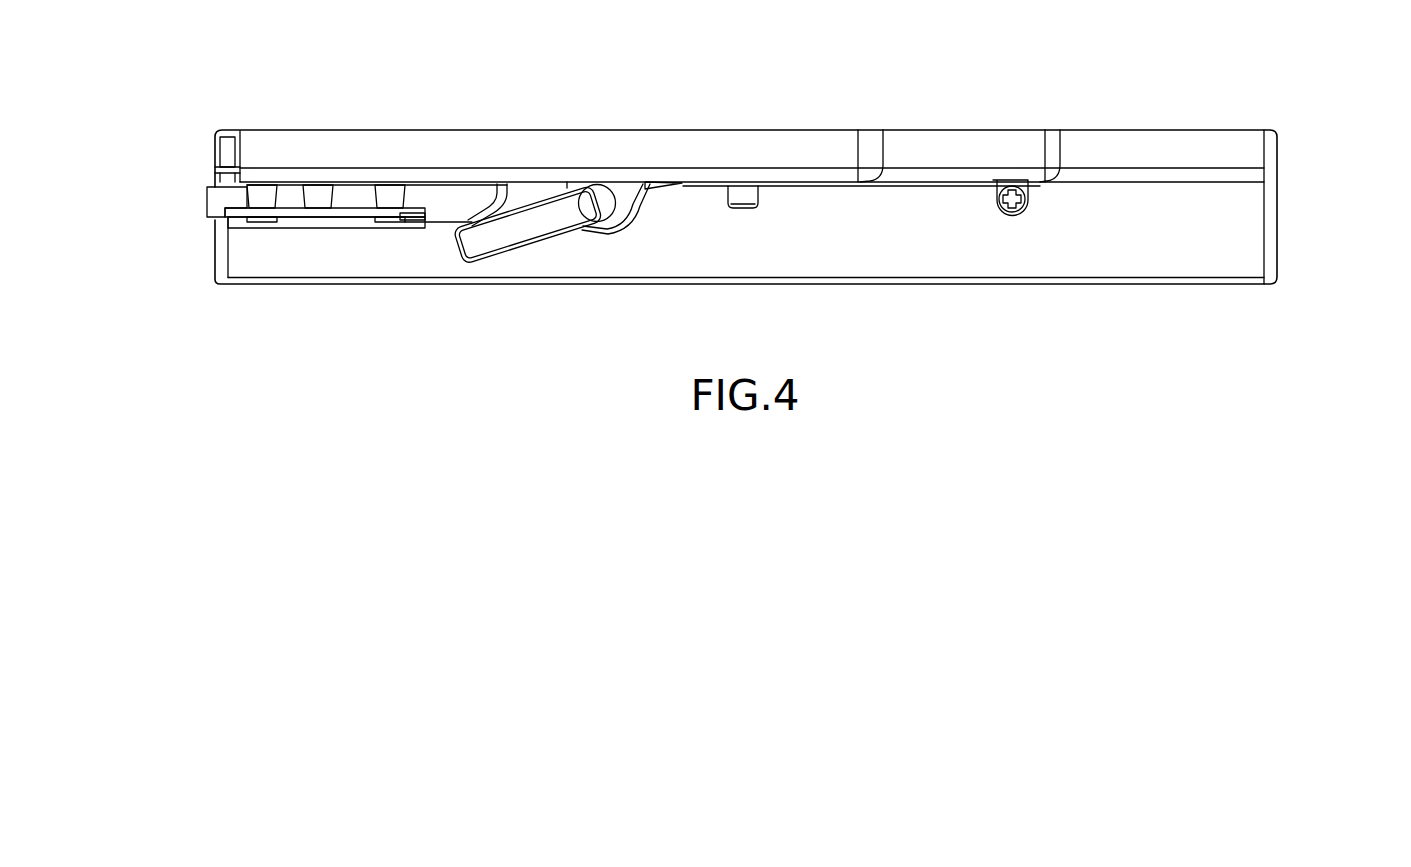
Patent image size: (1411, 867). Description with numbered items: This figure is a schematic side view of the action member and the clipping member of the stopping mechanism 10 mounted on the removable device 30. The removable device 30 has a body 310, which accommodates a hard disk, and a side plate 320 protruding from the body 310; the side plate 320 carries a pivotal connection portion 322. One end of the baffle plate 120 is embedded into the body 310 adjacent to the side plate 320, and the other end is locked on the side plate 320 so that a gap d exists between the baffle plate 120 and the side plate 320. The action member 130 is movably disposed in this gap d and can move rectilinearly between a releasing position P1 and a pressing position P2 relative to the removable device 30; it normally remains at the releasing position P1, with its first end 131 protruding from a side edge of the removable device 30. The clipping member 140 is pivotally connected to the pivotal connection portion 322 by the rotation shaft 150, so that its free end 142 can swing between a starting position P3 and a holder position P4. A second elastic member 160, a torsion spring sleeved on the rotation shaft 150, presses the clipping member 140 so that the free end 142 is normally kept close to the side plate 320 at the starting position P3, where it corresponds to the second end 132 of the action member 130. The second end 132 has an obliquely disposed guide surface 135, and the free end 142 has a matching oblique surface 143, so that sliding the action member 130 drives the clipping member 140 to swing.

The stopping mechanism 10 is at (423, 219).
The removable device 30 is at (795, 208).
The baffle plate 120 is at (323, 212).
The action member 130 is at (344, 156).
The first end 131 is at (207, 210).
The second end 132 is at (496, 190).
The guide surface 135 is at (502, 208).
The clipping member 140 is at (544, 232).
The free end 142 is at (467, 260).
The oblique surface 143 is at (458, 240).
The rotation shaft 150 is at (600, 217).
The second elastic member 160 is at (667, 186).
The body 310 is at (856, 267).
The side plate 320 is at (742, 145).
The pivotal connection portion 322 is at (600, 233).
The releasing position P1 is at (152, 205).
The pressing position P2 is at (206, 216).
The starting position P3 is at (593, 203).
The holder position P4 is at (460, 238).
The gap d is at (240, 182).